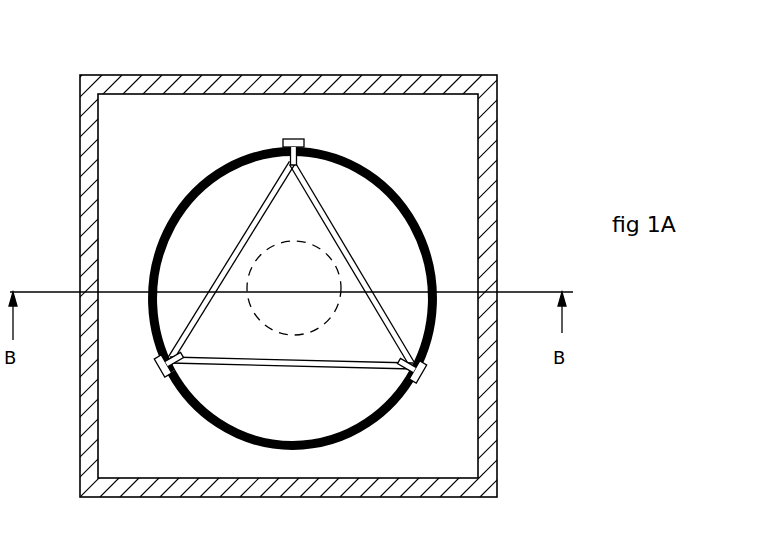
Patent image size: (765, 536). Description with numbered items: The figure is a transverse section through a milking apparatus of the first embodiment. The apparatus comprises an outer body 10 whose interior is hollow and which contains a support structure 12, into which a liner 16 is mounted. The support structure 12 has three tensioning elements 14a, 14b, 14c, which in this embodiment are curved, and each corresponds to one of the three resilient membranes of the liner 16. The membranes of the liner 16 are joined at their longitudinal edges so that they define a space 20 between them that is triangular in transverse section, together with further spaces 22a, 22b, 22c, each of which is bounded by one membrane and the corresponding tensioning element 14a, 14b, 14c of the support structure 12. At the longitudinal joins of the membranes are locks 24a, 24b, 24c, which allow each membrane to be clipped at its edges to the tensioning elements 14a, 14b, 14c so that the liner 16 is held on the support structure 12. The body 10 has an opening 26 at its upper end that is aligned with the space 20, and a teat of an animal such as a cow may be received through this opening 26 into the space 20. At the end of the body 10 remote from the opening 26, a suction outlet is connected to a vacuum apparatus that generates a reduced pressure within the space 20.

The outer body 10 is at (460, 74).
The support structure 12 is at (272, 289).
The tensioning element 14a is at (373, 170).
The tensioning element 14b is at (382, 415).
The tensioning element 14c is at (166, 222).
The liner 16 is at (291, 290).
The space 20 is at (310, 187).
The space 22a is at (378, 222).
The space 22b is at (305, 420).
The space 22c is at (214, 238).
The lock 24a is at (293, 139).
The lock 24b is at (423, 375).
The lock 24c is at (155, 368).
The opening 26 is at (313, 243).